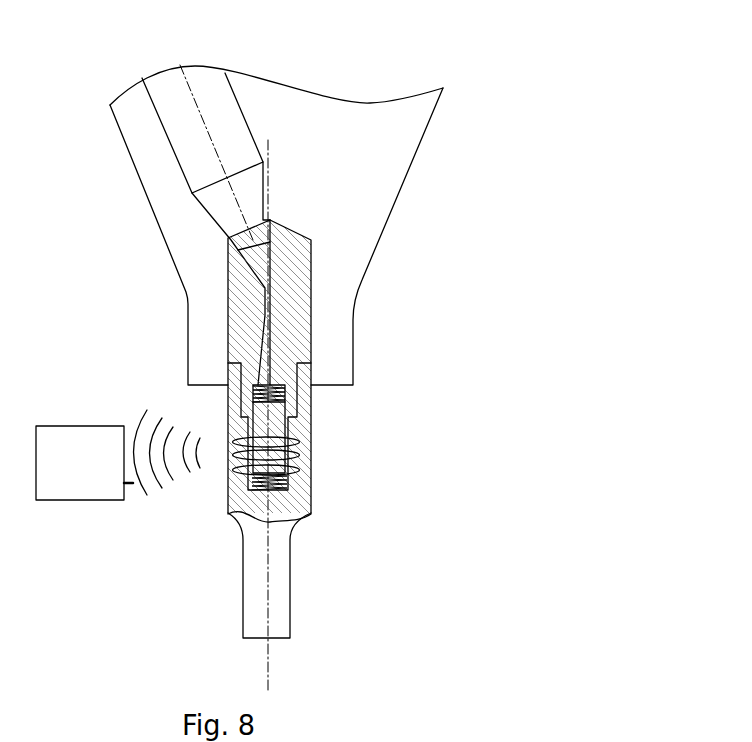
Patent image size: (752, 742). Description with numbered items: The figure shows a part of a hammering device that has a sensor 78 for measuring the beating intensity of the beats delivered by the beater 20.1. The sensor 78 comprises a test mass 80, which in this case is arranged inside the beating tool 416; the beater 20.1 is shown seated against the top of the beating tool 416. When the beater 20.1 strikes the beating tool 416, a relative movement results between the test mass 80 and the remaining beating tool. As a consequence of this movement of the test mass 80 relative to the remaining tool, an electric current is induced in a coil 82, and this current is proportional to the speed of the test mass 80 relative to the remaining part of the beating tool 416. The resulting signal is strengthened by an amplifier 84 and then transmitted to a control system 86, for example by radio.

The beater 20.1 is at (172, 93).
The beating tool 416 is at (312, 260).
The amplifier 84 is at (277, 428).
The test mass 80 is at (275, 460).
The coil 82 is at (280, 480).
The control system 86 is at (118, 455).
The sensor 78 is at (453, 428).